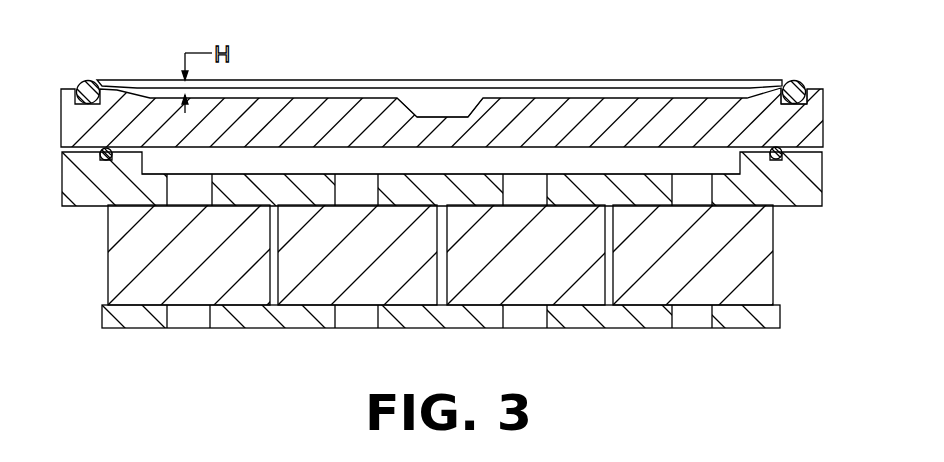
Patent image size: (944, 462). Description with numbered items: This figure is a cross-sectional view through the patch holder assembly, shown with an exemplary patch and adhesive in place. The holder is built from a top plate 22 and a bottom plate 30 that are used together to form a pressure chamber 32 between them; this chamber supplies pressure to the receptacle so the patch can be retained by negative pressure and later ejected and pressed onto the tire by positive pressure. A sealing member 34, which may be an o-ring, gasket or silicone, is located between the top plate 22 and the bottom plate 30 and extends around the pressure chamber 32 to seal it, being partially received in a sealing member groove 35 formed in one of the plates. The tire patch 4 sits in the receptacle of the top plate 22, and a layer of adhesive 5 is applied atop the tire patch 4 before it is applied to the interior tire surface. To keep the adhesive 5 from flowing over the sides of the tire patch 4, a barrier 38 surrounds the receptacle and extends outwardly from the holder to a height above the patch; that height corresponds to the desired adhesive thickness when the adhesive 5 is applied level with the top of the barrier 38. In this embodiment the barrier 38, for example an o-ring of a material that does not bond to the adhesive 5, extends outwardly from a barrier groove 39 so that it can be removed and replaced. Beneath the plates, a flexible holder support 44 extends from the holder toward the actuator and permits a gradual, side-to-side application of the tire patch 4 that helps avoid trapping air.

The top plate 22 is at (66, 120).
The adhesive 5 is at (428, 82).
The tire patch 4 is at (458, 103).
The barrier 38 is at (88, 81).
The barrier groove 39 is at (797, 104).
The pressure chamber 32 is at (557, 150).
The bottom plate 30 is at (70, 183).
The sealing member 34 is at (783, 153).
The sealing member groove 35 is at (778, 158).
The flexible holder support 44 is at (187, 277).